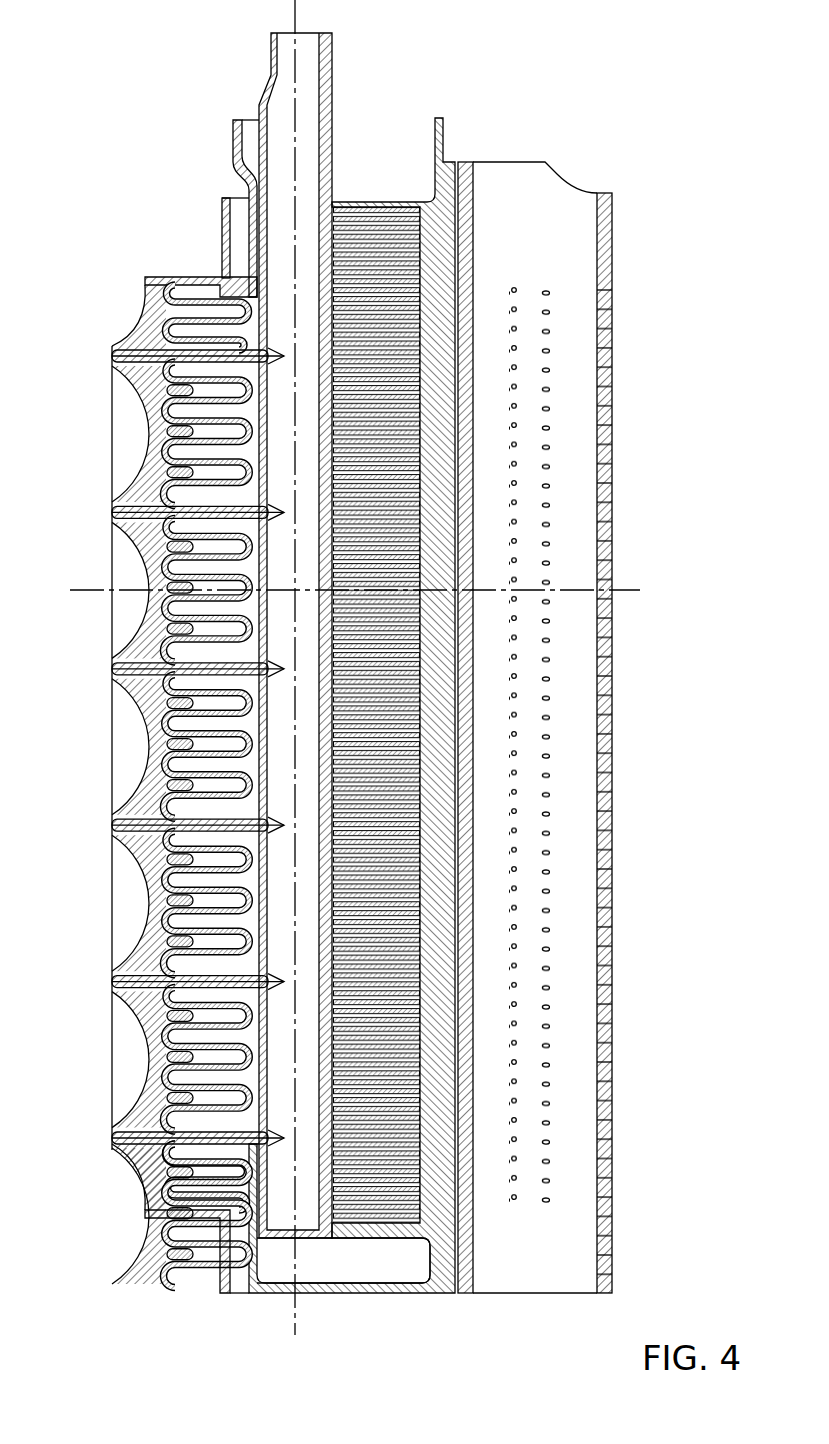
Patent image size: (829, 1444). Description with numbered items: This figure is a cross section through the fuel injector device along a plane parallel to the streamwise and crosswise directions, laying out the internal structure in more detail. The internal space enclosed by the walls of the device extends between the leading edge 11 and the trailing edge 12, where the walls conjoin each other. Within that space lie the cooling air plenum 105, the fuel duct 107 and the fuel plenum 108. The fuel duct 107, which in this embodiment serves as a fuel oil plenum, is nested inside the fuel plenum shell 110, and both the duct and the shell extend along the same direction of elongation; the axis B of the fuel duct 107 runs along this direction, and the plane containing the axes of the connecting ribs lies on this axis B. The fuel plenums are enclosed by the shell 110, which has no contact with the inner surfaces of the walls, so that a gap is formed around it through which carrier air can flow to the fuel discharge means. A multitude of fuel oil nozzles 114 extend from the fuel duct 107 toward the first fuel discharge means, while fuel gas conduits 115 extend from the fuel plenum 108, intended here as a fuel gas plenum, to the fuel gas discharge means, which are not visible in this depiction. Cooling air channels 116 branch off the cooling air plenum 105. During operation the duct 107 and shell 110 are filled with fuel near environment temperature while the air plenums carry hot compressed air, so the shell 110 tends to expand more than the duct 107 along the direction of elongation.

The fuel duct 107 is at (303, 42).
The cooling air plenum 105 is at (545, 200).
The leading edge 11 is at (612, 706).
The cooling air channels 116 is at (612, 290).
The trailing edge 12 is at (112, 430).
The fuel gas conduits 115 is at (207, 705).
The fuel oil nozzle 114 is at (112, 354).
The fuel plenum shell 110 is at (237, 1272).
The fuel plenum 108 is at (337, 1268).
The axis of duct B is at (294, 12).